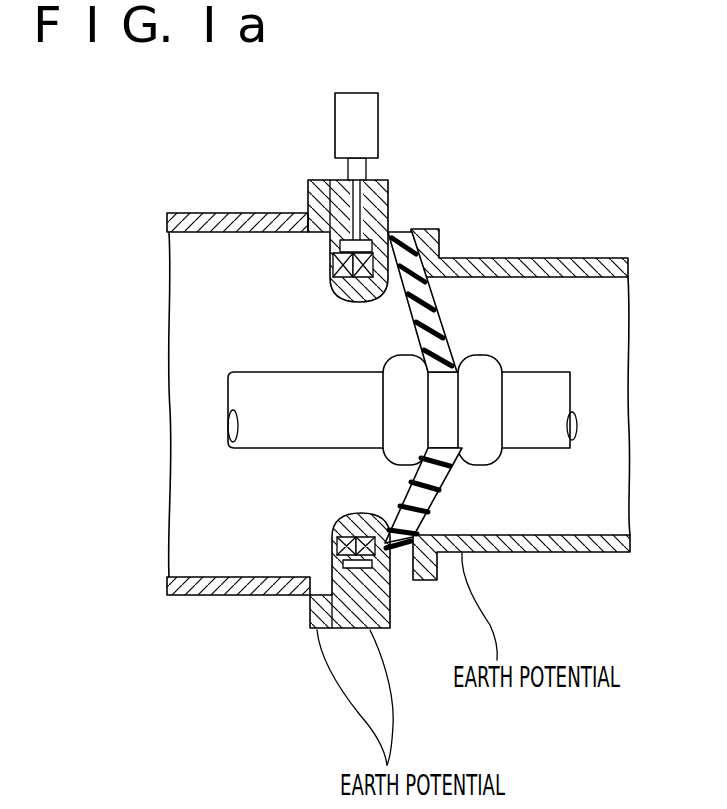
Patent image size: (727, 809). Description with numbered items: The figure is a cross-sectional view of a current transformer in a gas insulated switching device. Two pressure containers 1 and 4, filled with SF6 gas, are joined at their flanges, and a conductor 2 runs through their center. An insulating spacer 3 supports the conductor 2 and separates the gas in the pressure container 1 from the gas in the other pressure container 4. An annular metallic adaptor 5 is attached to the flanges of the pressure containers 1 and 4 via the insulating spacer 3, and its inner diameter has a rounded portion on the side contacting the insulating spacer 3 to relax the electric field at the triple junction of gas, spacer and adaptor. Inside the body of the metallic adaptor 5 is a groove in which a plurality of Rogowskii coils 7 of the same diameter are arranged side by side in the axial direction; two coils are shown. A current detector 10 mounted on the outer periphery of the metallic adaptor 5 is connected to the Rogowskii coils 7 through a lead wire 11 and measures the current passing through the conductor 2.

The pressure container 1 is at (183, 213).
The conductor 2 is at (273, 433).
The insulating spacer 3 is at (398, 243).
The pressure container 4 is at (554, 272).
The annular metallic adaptor 5 is at (387, 182).
The Rogowskii coils 7 is at (332, 267).
The current detector 10 is at (378, 102).
The lead wire 11 is at (363, 203).